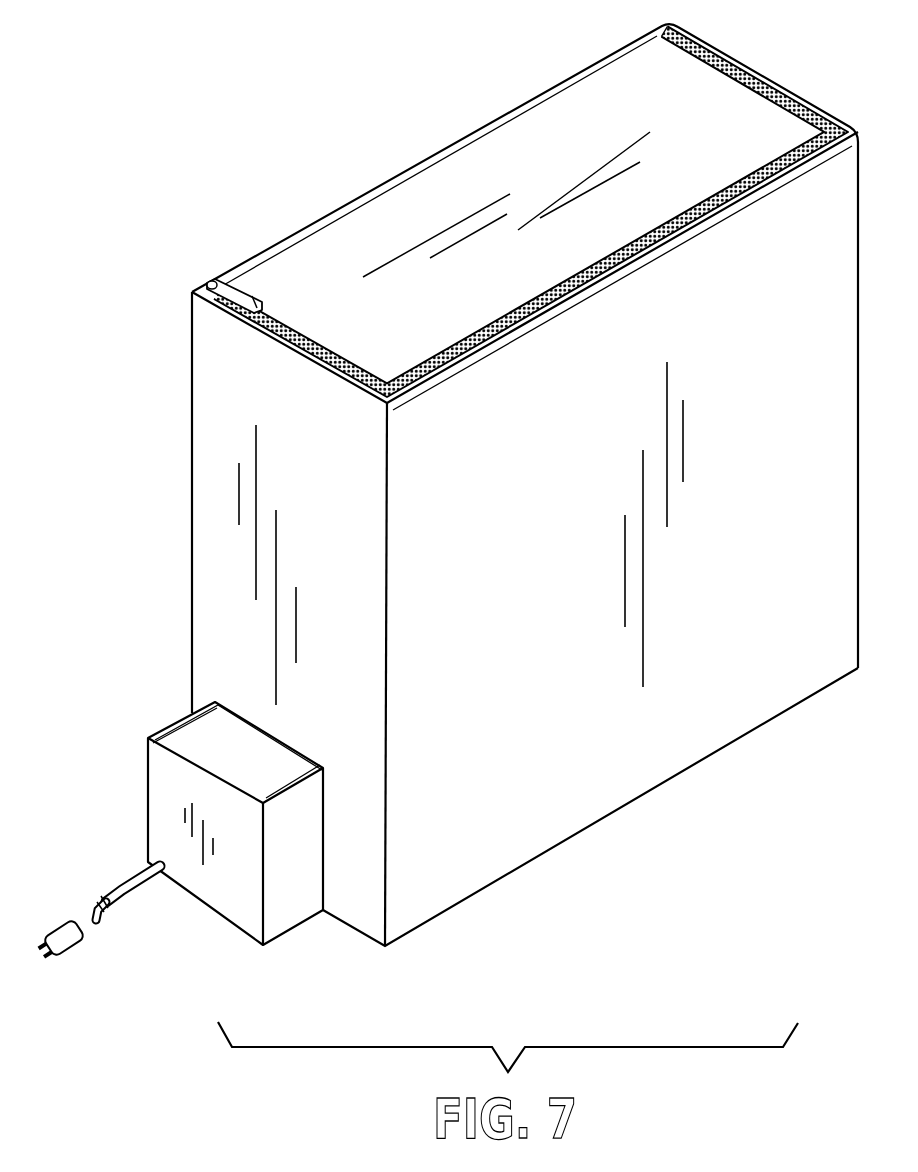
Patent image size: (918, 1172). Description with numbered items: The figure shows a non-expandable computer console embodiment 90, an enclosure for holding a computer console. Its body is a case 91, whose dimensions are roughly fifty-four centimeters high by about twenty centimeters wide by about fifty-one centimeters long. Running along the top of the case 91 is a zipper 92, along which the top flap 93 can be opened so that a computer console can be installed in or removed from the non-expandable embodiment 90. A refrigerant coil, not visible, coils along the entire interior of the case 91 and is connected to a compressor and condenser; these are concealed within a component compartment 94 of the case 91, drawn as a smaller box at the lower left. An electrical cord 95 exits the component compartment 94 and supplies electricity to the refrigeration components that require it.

The non-expandable computer console embodiment 90 is at (383, 107).
The case 91 is at (208, 378).
The zipper 92 is at (279, 318).
The lid 93 is at (538, 132).
The component compartment 94 is at (148, 742).
The electrical cord 95 is at (88, 921).